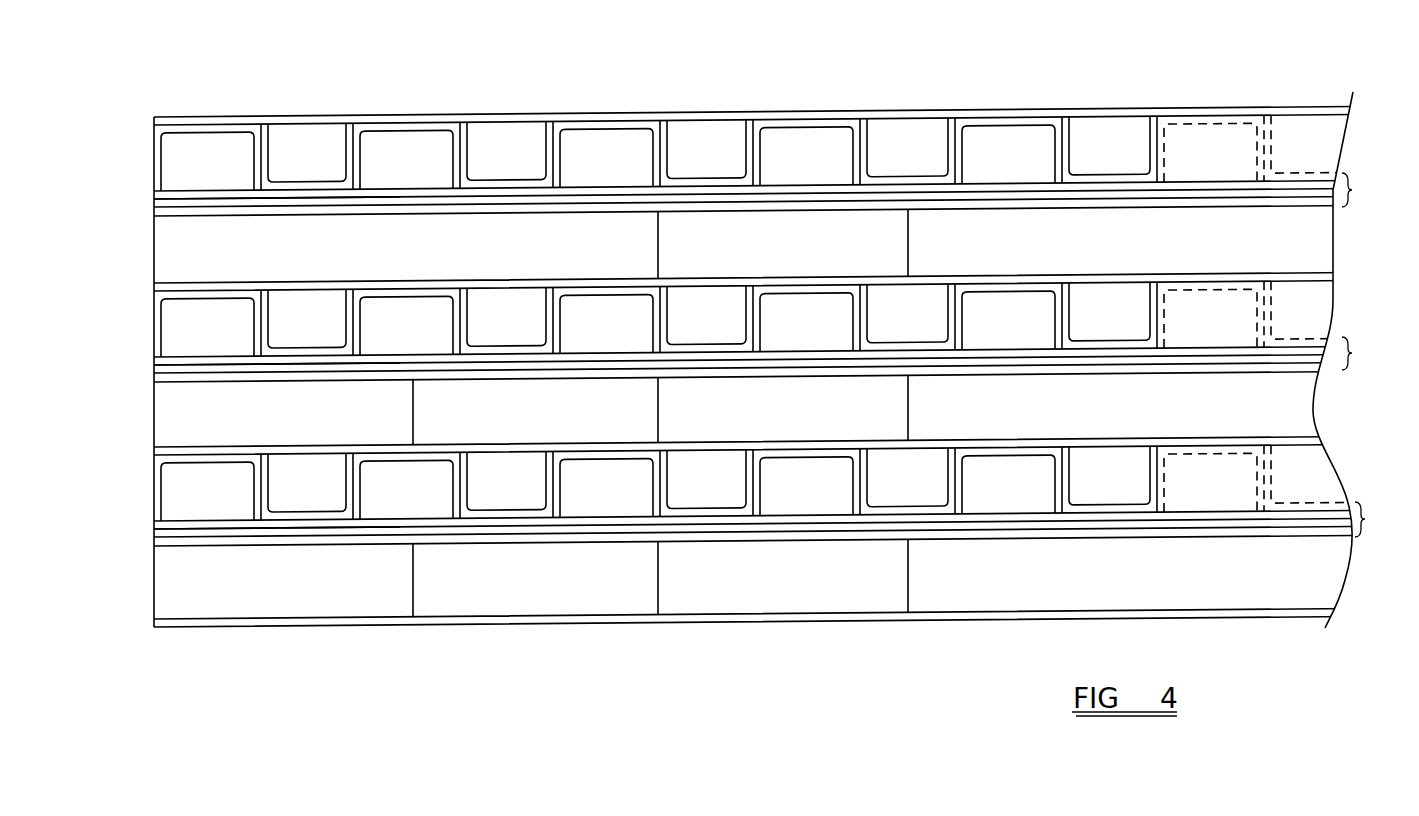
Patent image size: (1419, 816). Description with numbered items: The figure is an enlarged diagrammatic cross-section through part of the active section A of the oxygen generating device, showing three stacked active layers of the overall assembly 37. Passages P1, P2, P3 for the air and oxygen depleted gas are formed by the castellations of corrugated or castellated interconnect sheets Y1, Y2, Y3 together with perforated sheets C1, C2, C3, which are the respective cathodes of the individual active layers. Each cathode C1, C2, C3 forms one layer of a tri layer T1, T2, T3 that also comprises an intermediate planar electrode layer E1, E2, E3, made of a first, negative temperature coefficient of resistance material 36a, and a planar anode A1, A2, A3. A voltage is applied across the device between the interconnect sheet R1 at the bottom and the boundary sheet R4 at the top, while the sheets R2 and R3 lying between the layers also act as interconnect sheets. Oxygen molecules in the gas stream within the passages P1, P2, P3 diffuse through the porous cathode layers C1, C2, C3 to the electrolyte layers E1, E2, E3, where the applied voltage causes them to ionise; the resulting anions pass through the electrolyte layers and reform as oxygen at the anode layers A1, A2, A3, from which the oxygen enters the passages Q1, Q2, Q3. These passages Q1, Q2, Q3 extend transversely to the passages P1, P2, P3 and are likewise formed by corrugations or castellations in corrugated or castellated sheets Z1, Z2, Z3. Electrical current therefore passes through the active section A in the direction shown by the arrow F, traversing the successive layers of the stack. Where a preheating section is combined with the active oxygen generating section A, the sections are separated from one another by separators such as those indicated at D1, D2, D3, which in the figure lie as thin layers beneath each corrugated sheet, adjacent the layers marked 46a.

The active section A is at (806, 118).
The arrow indicating direction of electrical current F is at (777, 626).
The laminated assembly 37 is at (126, 337).
The separator layer 46a is at (153, 200).
The negative temperature coefficient of resistance material 36a is at (1264, 313).
The boundary sheet R4 is at (1078, 124).
The interconnect sheet R3 is at (1082, 283).
The interconnect sheet R2 is at (1088, 448).
The interconnect sheet R1 is at (1047, 618).
The passage P1 is at (783, 243).
The passage P2 is at (660, 409).
The passage P3 is at (660, 577).
The planar anode A1 is at (787, 191).
The planar anode A2 is at (787, 357).
The planar anode A3 is at (783, 521).
The corrugated or castellated sheet Z1 is at (862, 186).
The corrugated or castellated sheet Z2 is at (862, 352).
The corrugated or castellated sheet Z3 is at (862, 516).
The passage Q1 is at (1008, 150).
The passage Q2 is at (1008, 316).
The passage Q3 is at (1008, 480).
The separator D1 is at (640, 193).
The separator D2 is at (643, 357).
The separator D3 is at (643, 521).
The intermediate planar electrode layer E1 is at (531, 208).
The intermediate planar electrode layer E2 is at (526, 374).
The intermediate planar electrode layer E3 is at (538, 536).
The perforated sheet cathode C1 is at (950, 212).
The perforated sheet cathode C2 is at (958, 375).
The perforated sheet cathode C3 is at (952, 540).
The tri layer T1 is at (1363, 190).
The tri layer T2 is at (1362, 356).
The tri layer T3 is at (1380, 521).
The corrugated or castellated interconnect sheet Y1 is at (1313, 255).
The corrugated or castellated interconnect sheet Y2 is at (1297, 408).
The corrugated or castellated interconnect sheet Y3 is at (1318, 582).